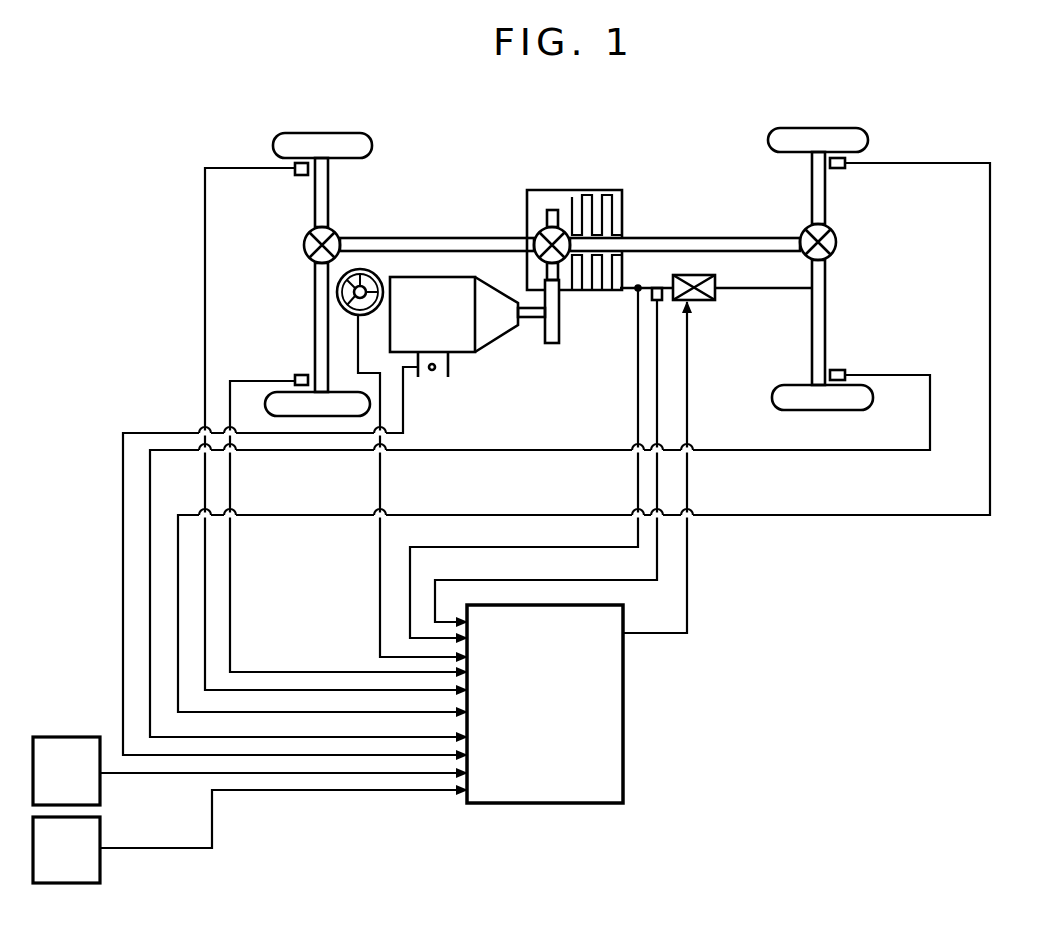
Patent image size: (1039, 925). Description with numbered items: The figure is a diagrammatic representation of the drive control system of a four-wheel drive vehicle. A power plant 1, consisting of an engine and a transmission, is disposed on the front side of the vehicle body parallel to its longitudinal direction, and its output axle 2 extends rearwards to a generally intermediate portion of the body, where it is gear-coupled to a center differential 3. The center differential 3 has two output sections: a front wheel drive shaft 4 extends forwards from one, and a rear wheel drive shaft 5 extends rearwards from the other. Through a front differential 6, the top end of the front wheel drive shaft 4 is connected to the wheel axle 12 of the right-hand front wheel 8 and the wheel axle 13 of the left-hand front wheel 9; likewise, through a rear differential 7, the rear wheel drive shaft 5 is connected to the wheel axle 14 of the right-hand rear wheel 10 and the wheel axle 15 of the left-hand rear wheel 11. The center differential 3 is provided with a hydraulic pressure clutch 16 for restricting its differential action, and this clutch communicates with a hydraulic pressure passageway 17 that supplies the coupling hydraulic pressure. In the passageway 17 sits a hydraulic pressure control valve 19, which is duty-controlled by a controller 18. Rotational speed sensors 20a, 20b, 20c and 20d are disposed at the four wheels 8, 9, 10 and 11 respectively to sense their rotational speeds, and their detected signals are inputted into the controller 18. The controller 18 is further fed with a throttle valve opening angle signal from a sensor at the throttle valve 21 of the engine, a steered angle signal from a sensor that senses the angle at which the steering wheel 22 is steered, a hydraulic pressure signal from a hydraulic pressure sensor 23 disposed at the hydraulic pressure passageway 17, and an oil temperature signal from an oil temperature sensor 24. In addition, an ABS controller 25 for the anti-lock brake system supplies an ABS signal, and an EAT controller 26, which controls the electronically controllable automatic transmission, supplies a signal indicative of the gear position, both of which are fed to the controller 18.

The power plant 1 is at (452, 268).
The output axle 2 is at (531, 318).
The center differential 3 is at (553, 228).
The front wheel drive shaft 4 is at (410, 239).
The rear wheel drive shaft 5 is at (692, 239).
The front differential 6 is at (304, 245).
The rear differential 7 is at (836, 243).
The right-hand front wheel 8 is at (298, 136).
The left-hand front wheel 9 is at (268, 395).
The right-hand rear wheel 10 is at (810, 131).
The left-hand rear wheel 11 is at (790, 386).
The wheel axle 12 is at (315, 200).
The wheel axle 13 is at (315, 301).
The wheel axle 14 is at (825, 201).
The wheel axle 15 is at (825, 296).
The hydraulic pressure clutch 16 is at (631, 183).
The hydraulic pressure passageway 17 is at (745, 288).
The controller 18 is at (558, 717).
The hydraulic pressure control valve 19 is at (706, 301).
The rotational speed sensor 20a is at (295, 168).
The rotational speed sensor 20b is at (300, 375).
The rotational speed sensor 20c is at (846, 163).
The rotational speed sensor 20d is at (846, 373).
The throttle valve 21 is at (433, 371).
The steering wheel 22 is at (352, 270).
The hydraulic pressure sensor 23 is at (641, 301).
The oil temperature sensor 24 is at (625, 290).
The ABS controller 25 is at (88, 790).
The EAT controller 26 is at (88, 867).